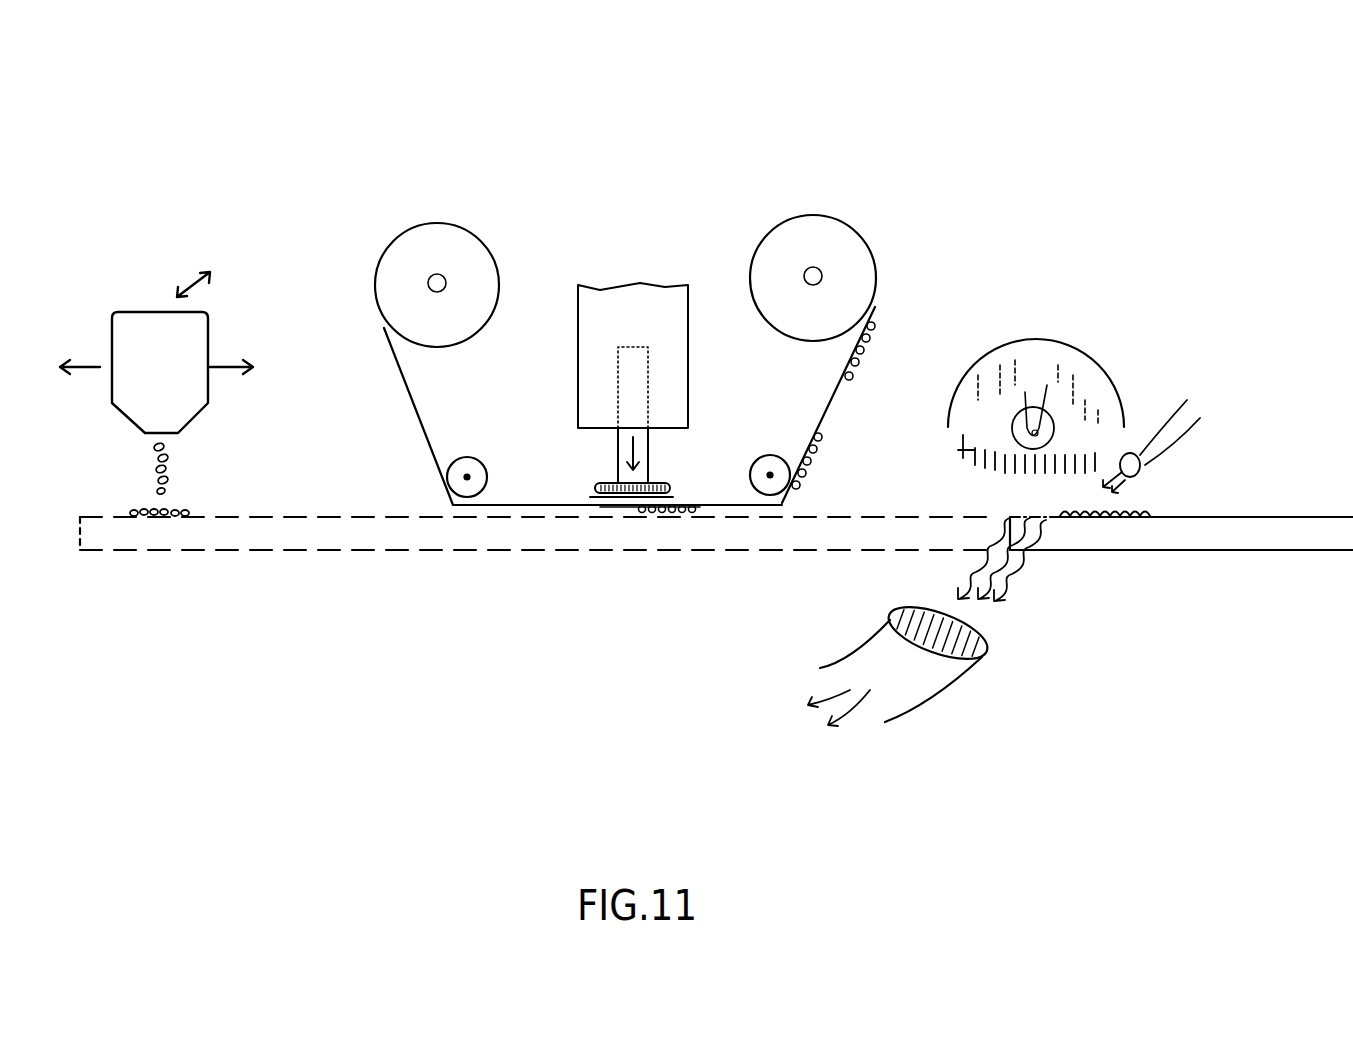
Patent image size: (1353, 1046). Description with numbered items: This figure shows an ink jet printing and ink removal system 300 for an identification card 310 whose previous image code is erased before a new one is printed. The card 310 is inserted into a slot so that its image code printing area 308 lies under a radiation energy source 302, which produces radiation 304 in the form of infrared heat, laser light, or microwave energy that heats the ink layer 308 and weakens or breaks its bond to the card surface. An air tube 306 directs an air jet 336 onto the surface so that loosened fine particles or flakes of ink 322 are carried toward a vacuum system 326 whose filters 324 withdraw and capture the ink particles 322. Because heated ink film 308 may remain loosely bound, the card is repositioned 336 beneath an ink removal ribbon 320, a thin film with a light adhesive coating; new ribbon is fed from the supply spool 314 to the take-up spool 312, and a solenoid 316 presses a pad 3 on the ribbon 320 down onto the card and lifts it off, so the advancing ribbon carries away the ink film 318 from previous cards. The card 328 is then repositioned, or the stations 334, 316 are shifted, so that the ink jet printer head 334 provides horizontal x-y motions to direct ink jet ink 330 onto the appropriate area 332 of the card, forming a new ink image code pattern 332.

The manufacturing system 300 is at (712, 98).
The radiation energy source 302 is at (1053, 340).
The radiation 304 is at (965, 452).
The air tube 306 is at (1193, 410).
The image code printing area 308 is at (1138, 512).
The plastic card 310 is at (1340, 538).
The take-up spool 312 is at (822, 222).
The supply spool 314 is at (415, 235).
The solenoid 316 is at (592, 300).
The die pad 3 is at (560, 483).
The ink film 318 is at (862, 360).
The ink removal ribbon 320 is at (697, 510).
The ink particles 322 is at (1016, 562).
The filters 324 is at (985, 645).
The vacuum system 326 is at (855, 723).
The card position 328 is at (113, 540).
The ink jet ink 330 is at (170, 462).
The ink image code pattern area 332 is at (138, 510).
The ink jet printer head 334 is at (198, 345).
The air jet 336 is at (648, 540).